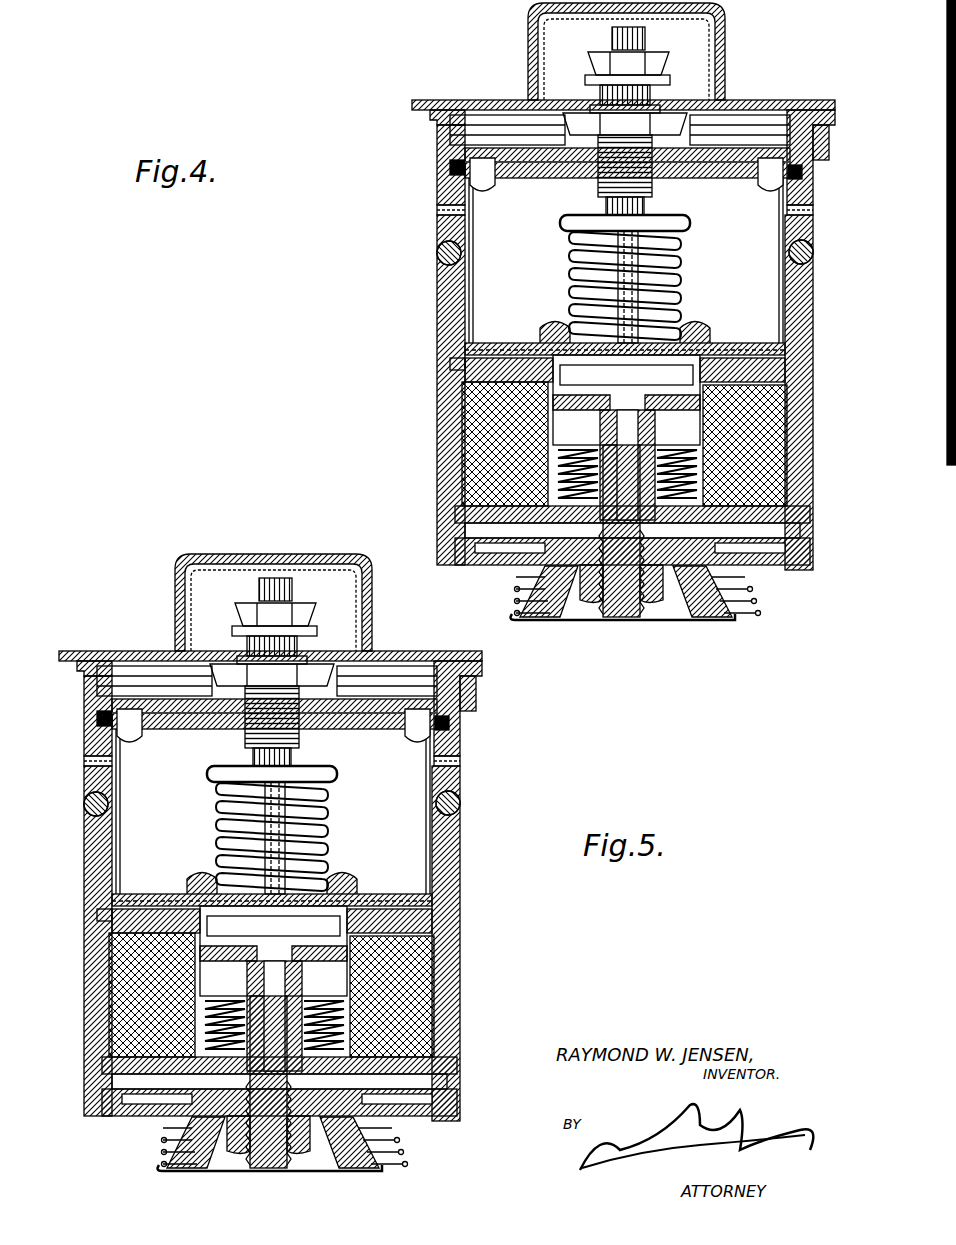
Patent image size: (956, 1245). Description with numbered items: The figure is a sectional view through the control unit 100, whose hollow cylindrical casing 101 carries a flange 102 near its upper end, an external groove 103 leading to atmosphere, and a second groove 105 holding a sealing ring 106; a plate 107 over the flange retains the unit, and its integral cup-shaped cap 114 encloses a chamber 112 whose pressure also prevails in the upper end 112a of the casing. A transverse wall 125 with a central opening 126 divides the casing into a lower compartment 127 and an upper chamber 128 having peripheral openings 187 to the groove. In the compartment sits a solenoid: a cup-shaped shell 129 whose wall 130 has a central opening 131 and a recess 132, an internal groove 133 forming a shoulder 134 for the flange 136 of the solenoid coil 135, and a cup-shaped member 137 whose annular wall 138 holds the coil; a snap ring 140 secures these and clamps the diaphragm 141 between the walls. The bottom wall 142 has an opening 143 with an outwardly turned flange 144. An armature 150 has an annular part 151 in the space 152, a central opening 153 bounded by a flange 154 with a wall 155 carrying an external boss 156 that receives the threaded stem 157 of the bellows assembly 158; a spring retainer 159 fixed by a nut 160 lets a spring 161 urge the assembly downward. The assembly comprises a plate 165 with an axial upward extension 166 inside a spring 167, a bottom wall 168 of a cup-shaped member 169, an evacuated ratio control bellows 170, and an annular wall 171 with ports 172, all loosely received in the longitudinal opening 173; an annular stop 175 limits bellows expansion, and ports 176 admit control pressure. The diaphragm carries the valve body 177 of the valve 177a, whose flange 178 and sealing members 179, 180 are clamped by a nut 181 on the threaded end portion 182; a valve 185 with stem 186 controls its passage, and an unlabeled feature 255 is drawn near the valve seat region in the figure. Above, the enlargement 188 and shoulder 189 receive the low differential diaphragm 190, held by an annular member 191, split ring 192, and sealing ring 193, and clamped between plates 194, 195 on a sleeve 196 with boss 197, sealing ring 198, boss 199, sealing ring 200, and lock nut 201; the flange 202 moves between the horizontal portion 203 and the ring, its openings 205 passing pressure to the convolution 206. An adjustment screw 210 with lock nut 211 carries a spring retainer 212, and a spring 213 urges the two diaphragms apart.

In FIG. 4, the control unit 100 is at (422, 298).
In FIG. 5, the control unit 100 is at (488, 959).
In FIG. 4, the hollow cylindrical casing 101 is at (448, 317).
In FIG. 5, the hollow cylindrical casing 101 is at (90, 855).
In FIG. 4, the flange 102 is at (430, 115).
In FIG. 5, the flange 102 is at (78, 666).
In FIG. 4, the external groove 103 is at (445, 195).
In FIG. 5, the external groove 103 is at (88, 745).
In FIG. 4, the second groove 105 is at (437, 247).
In FIG. 5, the second groove 105 is at (470, 800).
In FIG. 4, the sealing ring 106 is at (437, 258).
In FIG. 5, the sealing ring 106 is at (465, 808).
In FIG. 4, the plate 107 is at (497, 100).
In FIG. 5, the plate 107 is at (420, 653).
In FIG. 4, the chamber 112 is at (715, 43).
In FIG. 5, the chamber 112 is at (312, 568).
In FIG. 4, the upper end of the casing 112a is at (440, 183).
In FIG. 5, the upper end of the casing 112a is at (455, 700).
In FIG. 4, the cup-shaped cap 114 is at (528, 18).
In FIG. 5, the cup-shaped cap 114 is at (177, 565).
In FIG. 4, the transverse wall 125 is at (748, 345).
In FIG. 5, the transverse wall 125 is at (120, 890).
In FIG. 4, the central opening 126 is at (710, 338).
In FIG. 5, the central opening 126 is at (355, 892).
In FIG. 4, the lower compartment 127 is at (790, 365).
In FIG. 5, the lower compartment 127 is at (440, 912).
In FIG. 4, the upper chamber 128 is at (521, 258).
In FIG. 5, the upper chamber 128 is at (149, 800).
In FIG. 4, the cup-shaped shell 129 is at (795, 450).
In FIG. 5, the cup-shaped shell 129 is at (445, 980).
In FIG. 4, the wall 130 is at (470, 373).
In FIG. 5, the wall 130 is at (120, 920).
In FIG. 4, the central opening 131 is at (540, 343).
In FIG. 5, the central opening 131 is at (205, 940).
In FIG. 4, the recess 132 is at (530, 353).
In FIG. 5, the recess 132 is at (195, 930).
In FIG. 4, the internal groove 133 is at (790, 528).
In FIG. 4, the shoulder 134 is at (455, 510).
In FIG. 5, the shoulder 134 is at (100, 1058).
In FIG. 4, the solenoid coil 135 is at (470, 400).
In FIG. 5, the solenoid coil 135 is at (420, 935).
In FIG. 4, the flange 136 is at (462, 527).
In FIG. 5, the flange 136 is at (105, 1075).
In FIG. 4, the cup-shaped member 137 is at (500, 555).
In FIG. 5, the cup-shaped member 137 is at (130, 1105).
In FIG. 4, the annular wall 138 is at (465, 545).
In FIG. 5, the annular wall 138 is at (440, 1078).
In FIG. 4, the snap ring 140 is at (795, 550).
In FIG. 5, the snap ring 140 is at (440, 1100).
In FIG. 4, the diaphragm 141 is at (695, 325).
In FIG. 5, the diaphragm 141 is at (200, 880).
In FIG. 4, the bottom wall 142 is at (505, 555).
In FIG. 5, the bottom wall 142 is at (135, 1110).
In FIG. 4, the central opening 143 is at (715, 540).
In FIG. 5, the central opening 143 is at (190, 1060).
In FIG. 4, the outwardly turned flange 144 is at (516, 589).
In FIG. 5, the outwardly turned flange 144 is at (165, 1140).
In FIG. 4, the armature 150 is at (760, 510).
In FIG. 5, the armature 150 is at (450, 1060).
In FIG. 4, the annular part 151 is at (785, 510).
In FIG. 5, the annular part 151 is at (445, 1070).
In FIG. 4, the space 152 is at (780, 560).
In FIG. 5, the space 152 is at (440, 1060).
In FIG. 4, the central opening 153 is at (590, 575).
In FIG. 5, the central opening 153 is at (175, 1130).
In FIG. 4, the outwardly extending flange 154 is at (540, 530).
In FIG. 5, the outwardly extending flange 154 is at (380, 1130).
In FIG. 5, the wall 155 is at (380, 1145).
In FIG. 4, the external boss 156 is at (598, 580).
In FIG. 5, the external boss 156 is at (240, 1120).
In FIG. 4, the threaded stem 157 is at (633, 620).
In FIG. 5, the threaded stem 157 is at (268, 1180).
In FIG. 4, the bellows assembly 158 is at (695, 470).
In FIG. 5, the bellows assembly 158 is at (175, 1150).
In FIG. 4, the spring retainer 159 is at (548, 620).
In FIG. 5, the spring retainer 159 is at (385, 1165).
In FIG. 4, the nut 160 is at (650, 600).
In FIG. 5, the nut 160 is at (260, 1140).
In FIG. 4, the spring 161 is at (516, 613).
In FIG. 5, the spring 161 is at (165, 1165).
In FIG. 4, the plate 165 is at (700, 615).
In FIG. 5, the plate 165 is at (300, 1130).
In FIG. 4, the axial upward extension 166 is at (598, 485).
In FIG. 5, the axial upward extension 166 is at (205, 1022).
In FIG. 4, the spring 167 is at (556, 470).
In FIG. 5, the spring 167 is at (205, 1035).
In FIG. 4, the bottom wall 168 is at (650, 432).
In FIG. 5, the bottom wall 168 is at (280, 985).
In FIG. 4, the cup-shaped member 169 is at (700, 400).
In FIG. 5, the cup-shaped member 169 is at (400, 960).
In FIG. 4, the ratio control bellows 170 is at (705, 490).
In FIG. 5, the ratio control bellows 170 is at (350, 1020).
In FIG. 4, the annular wall 171 is at (695, 425).
In FIG. 4, the ports 172 is at (545, 413).
In FIG. 5, the ports 172 is at (200, 975).
In FIG. 5, the longitudinal opening 173 is at (430, 910).
In FIG. 4, the annular stop 175 is at (647, 404).
In FIG. 5, the annular stop 175 is at (407, 890).
In FIG. 4, the ports 176 is at (675, 575).
In FIG. 5, the ports 176 is at (345, 1165).
In FIG. 4, the valve body 177 is at (668, 290).
In FIG. 5, the valve body 177 is at (315, 865).
In FIG. 5, the valve 177a is at (310, 850).
In FIG. 4, the flange 178 is at (570, 340).
In FIG. 5, the flange 178 is at (340, 890).
In FIG. 5, the sealing member 179 is at (230, 890).
In FIG. 4, the sealing member 180 is at (555, 383).
In FIG. 5, the sealing member 180 is at (225, 900).
In FIG. 4, the nut 181 is at (625, 380).
In FIG. 5, the nut 181 is at (240, 960).
In FIG. 4, the threaded end portion 182 is at (565, 455).
In FIG. 5, the threaded end portion 182 is at (285, 970).
In FIG. 5, the valve 185 is at (305, 840).
In FIG. 4, the stem 186 is at (580, 279).
In FIG. 5, the stem 186 is at (300, 810).
In FIG. 4, the peripheral openings 187 is at (445, 210).
In FIG. 5, the peripheral openings 187 is at (95, 762).
In FIG. 5, the enlargement 188 is at (110, 652).
In FIG. 4, the shoulder 189 is at (450, 167).
In FIG. 5, the shoulder 189 is at (97, 720).
In FIG. 4, the low differential diaphragm 190 is at (488, 192).
In FIG. 5, the low differential diaphragm 190 is at (425, 740).
In FIG. 4, the annular member 191 is at (800, 160).
In FIG. 5, the annular member 191 is at (460, 710).
In FIG. 4, the split ring 192 is at (823, 114).
In FIG. 5, the split ring 192 is at (470, 677).
In FIG. 4, the sealing ring 193 is at (803, 175).
In FIG. 5, the sealing ring 193 is at (450, 722).
In FIG. 4, the plate 194 is at (545, 185).
In FIG. 5, the plate 194 is at (185, 738).
In FIG. 4, the plate 195 is at (542, 148).
In FIG. 5, the plate 195 is at (180, 700).
In FIG. 4, the sleeve 196 is at (700, 150).
In FIG. 5, the sleeve 196 is at (310, 690).
In FIG. 4, the boss 197 is at (580, 152).
In FIG. 5, the boss 197 is at (210, 700).
In FIG. 4, the sealing ring 198 is at (715, 160).
In FIG. 5, the sealing ring 198 is at (355, 700).
In FIG. 4, the upwardly extending boss 199 is at (690, 150).
In FIG. 5, the upwardly extending boss 199 is at (335, 695).
In FIG. 4, the sealing ring 200 is at (623, 125).
In FIG. 5, the sealing ring 200 is at (322, 664).
In FIG. 4, the lock nut 201 is at (678, 120).
In FIG. 5, the lock nut 201 is at (235, 670).
In FIG. 4, the flange 202 is at (445, 135).
In FIG. 5, the flange 202 is at (92, 690).
In FIG. 4, the horizontal portion 203 is at (455, 155).
In FIG. 5, the horizontal portion 203 is at (100, 708).
In FIG. 4, the openings 205 is at (485, 152).
In FIG. 5, the openings 205 is at (130, 700).
In FIG. 4, the convolution 206 is at (770, 190).
In FIG. 5, the convolution 206 is at (420, 750).
In FIG. 4, the adjustment screw 210 is at (645, 40).
In FIG. 5, the adjustment screw 210 is at (268, 580).
In FIG. 4, the lock nut 211 is at (667, 63).
In FIG. 5, the lock nut 211 is at (295, 605).
In FIG. 4, the spring retainer 212 is at (690, 205).
In FIG. 5, the spring retainer 212 is at (300, 760).
In FIG. 4, the spring 213 is at (688, 256).
In FIG. 5, the spring 213 is at (230, 810).
In FIG. 5, the passage 255 is at (300, 990).